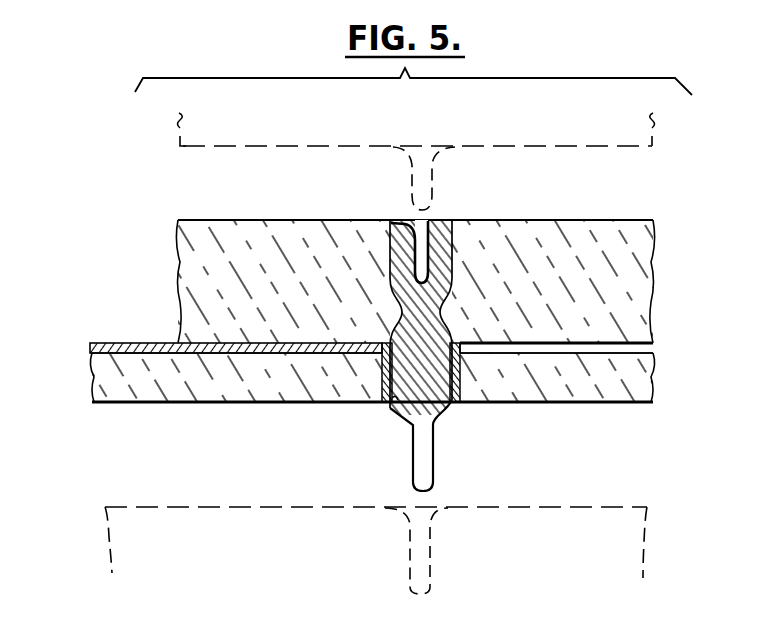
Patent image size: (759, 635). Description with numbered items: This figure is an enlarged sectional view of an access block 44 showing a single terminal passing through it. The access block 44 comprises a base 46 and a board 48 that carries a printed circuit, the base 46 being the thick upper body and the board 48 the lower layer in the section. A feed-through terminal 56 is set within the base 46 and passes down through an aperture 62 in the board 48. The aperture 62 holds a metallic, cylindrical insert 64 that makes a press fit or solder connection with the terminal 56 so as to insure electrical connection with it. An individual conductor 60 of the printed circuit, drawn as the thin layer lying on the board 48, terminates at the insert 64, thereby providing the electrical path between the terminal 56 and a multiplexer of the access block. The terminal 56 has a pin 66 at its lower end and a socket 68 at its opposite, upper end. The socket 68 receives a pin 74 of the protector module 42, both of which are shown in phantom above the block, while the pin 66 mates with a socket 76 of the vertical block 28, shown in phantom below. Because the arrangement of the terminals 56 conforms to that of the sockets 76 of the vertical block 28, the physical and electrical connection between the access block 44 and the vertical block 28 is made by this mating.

The vertical block 28 is at (582, 506).
The protector module 42 is at (540, 148).
The access block 44 is at (208, 404).
The base 46 is at (183, 247).
The board 48 is at (92, 372).
The feed-through terminal 56 is at (441, 412).
The conductor 60 is at (135, 343).
The aperture 62 is at (395, 404).
The insert 64 is at (380, 380).
The pin 66 is at (434, 465).
The socket 68 is at (430, 220).
The pin 74 is at (406, 166).
The socket 76 is at (440, 500).